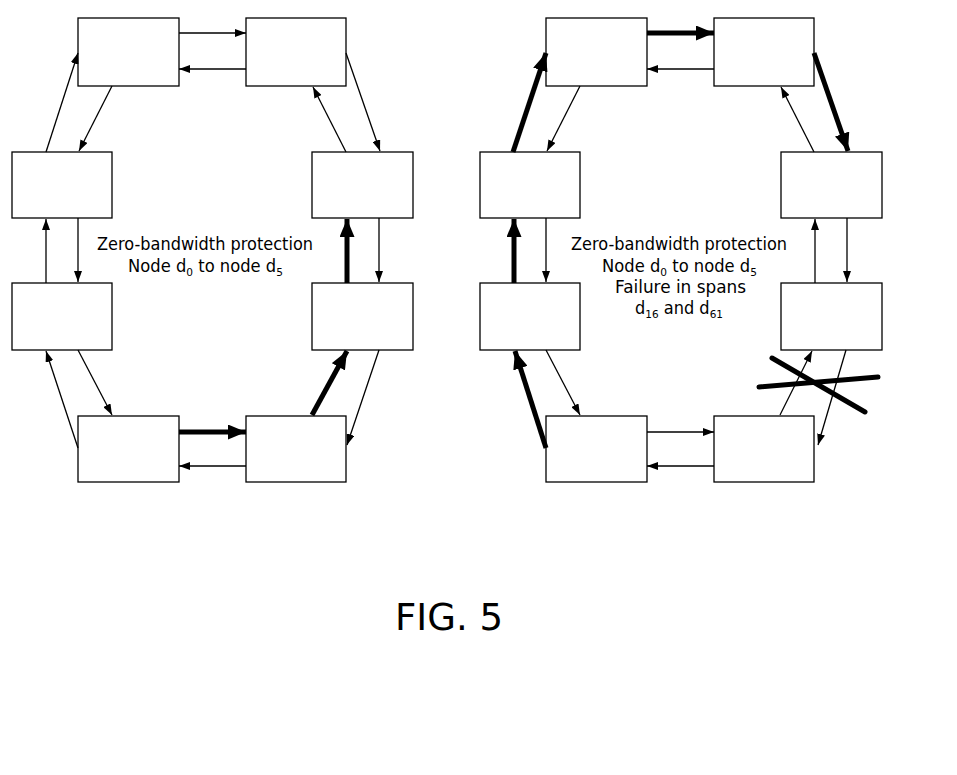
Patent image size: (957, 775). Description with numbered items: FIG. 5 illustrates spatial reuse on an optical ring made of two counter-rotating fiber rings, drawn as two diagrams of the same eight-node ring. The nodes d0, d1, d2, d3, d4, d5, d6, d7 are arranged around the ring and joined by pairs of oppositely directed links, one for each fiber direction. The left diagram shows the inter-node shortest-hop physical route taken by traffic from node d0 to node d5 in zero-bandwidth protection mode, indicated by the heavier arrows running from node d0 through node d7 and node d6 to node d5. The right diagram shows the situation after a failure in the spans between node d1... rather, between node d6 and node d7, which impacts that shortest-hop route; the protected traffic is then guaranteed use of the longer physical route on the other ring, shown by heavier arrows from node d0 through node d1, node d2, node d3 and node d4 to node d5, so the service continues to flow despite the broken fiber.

The node d0 is at (362, 449).
The node d1 is at (296, 316).
The node d2 is at (296, 185).
The node d3 is at (362, 52).
The node d4 is at (530, 52).
The node d5 is at (597, 185).
The node d6 is at (597, 316).
The node d7 is at (530, 449).